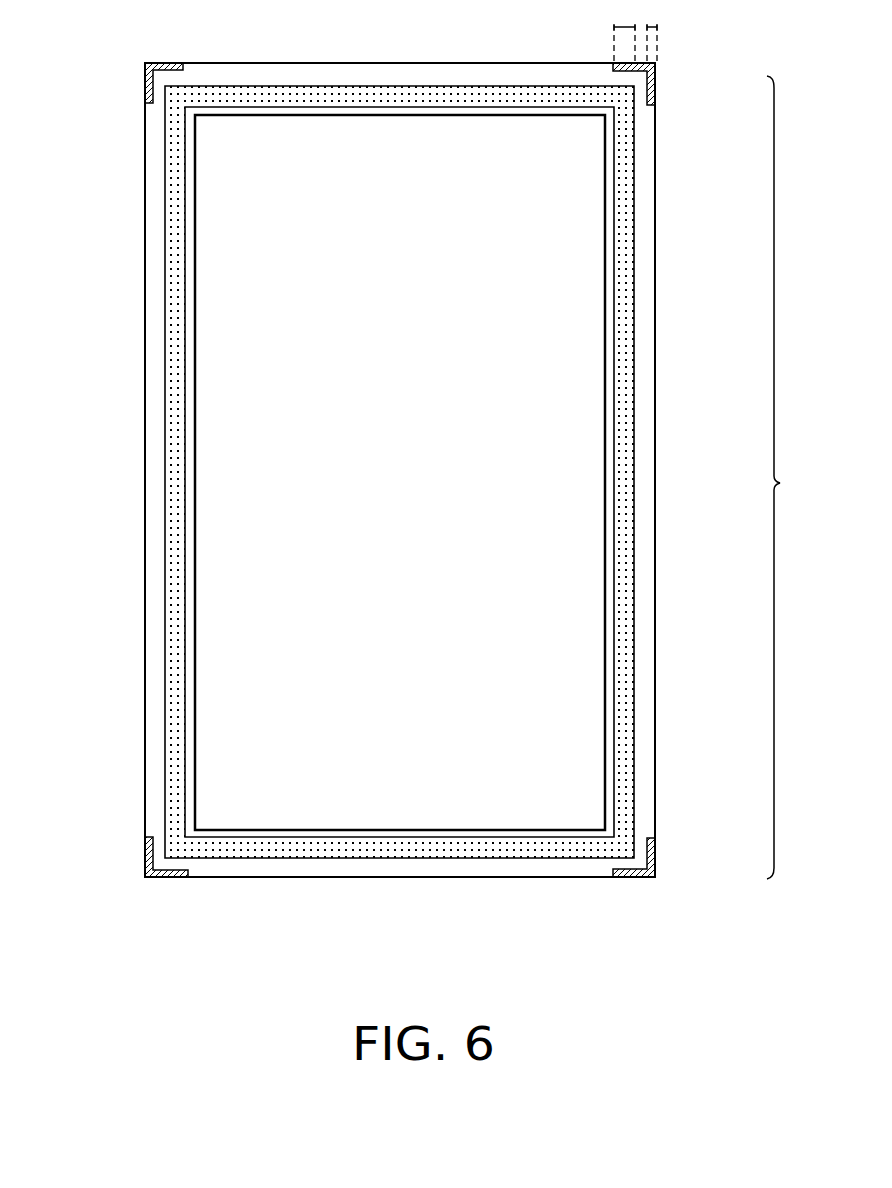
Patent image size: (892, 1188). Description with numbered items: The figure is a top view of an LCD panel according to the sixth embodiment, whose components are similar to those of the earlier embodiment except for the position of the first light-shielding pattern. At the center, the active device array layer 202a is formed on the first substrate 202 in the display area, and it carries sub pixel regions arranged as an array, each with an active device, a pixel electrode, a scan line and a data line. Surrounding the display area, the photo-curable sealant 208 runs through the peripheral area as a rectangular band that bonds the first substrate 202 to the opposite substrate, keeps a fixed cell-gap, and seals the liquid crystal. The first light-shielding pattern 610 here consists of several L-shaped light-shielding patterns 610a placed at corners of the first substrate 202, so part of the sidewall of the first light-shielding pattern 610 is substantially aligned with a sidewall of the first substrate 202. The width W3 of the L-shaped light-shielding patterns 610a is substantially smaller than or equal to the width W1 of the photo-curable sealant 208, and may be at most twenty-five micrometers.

The first substrate 202 is at (582, 878).
The active device array layer 202a is at (217, 430).
The photo-curable sealant 208 is at (168, 373).
The first light-shielding pattern 610 is at (797, 477).
The L-shaped light-shielding patterns 610a is at (650, 90).
The width of the photo-curable sealant W1 is at (622, 27).
The width of the L-shaped light-shielding patterns W3 is at (652, 27).